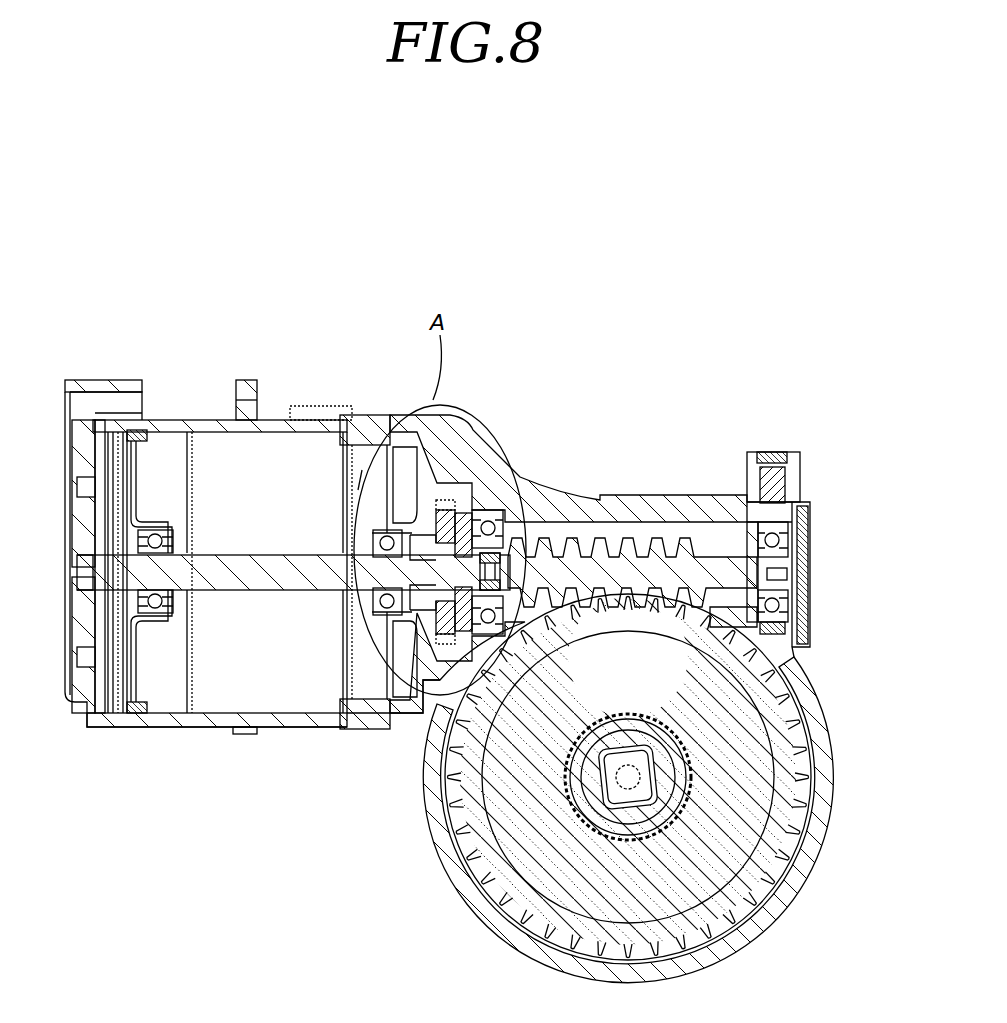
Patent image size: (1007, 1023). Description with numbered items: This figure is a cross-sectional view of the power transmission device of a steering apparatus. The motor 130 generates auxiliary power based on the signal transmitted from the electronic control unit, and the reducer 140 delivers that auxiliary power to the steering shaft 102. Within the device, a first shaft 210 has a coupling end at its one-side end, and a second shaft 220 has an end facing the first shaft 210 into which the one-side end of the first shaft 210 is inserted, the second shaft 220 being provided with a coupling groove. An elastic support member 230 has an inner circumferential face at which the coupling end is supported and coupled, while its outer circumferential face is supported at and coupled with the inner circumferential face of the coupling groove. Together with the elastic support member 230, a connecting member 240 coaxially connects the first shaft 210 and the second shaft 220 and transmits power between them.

The motor 130 is at (152, 310).
The first shaft 210 is at (262, 568).
The second shaft 220 is at (675, 563).
The elastic support member 230 is at (510, 562).
The connecting member 240 is at (451, 494).
The reducer 140 is at (455, 838).
The steering shaft 102 is at (582, 797).